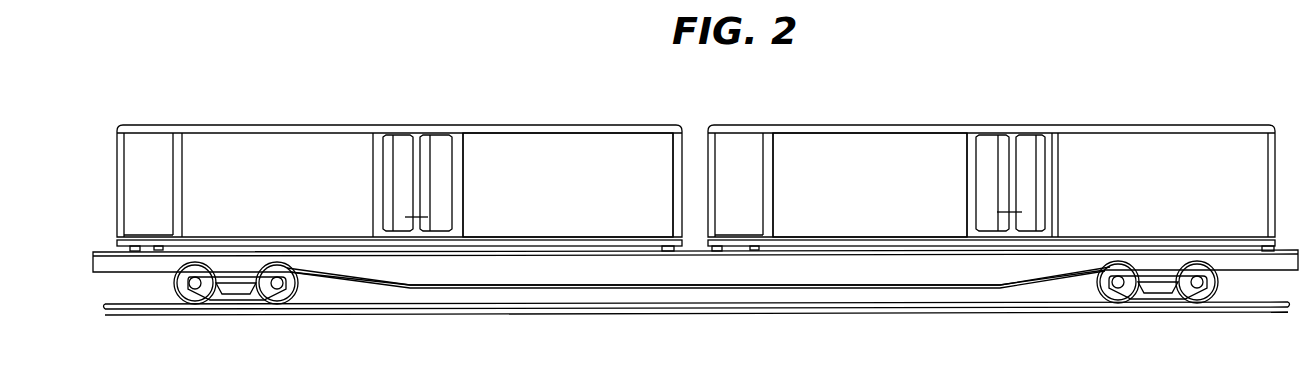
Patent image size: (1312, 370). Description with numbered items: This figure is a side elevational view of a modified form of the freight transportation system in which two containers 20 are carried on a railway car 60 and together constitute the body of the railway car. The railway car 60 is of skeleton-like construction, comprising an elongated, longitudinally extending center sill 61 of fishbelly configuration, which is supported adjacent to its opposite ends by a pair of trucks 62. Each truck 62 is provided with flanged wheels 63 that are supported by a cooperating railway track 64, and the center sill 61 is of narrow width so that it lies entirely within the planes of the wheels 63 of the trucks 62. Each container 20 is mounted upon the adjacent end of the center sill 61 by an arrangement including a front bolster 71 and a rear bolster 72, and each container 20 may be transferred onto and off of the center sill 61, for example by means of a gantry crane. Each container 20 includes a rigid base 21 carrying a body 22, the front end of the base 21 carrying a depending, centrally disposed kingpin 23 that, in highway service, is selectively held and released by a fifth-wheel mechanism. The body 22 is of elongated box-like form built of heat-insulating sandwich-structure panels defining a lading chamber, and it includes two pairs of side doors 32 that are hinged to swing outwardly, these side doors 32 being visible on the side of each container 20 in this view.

The container 20 is at (522, 109).
The base 21 is at (536, 238).
The body 22 is at (573, 187).
The kingpin 23 is at (158, 246).
The side doors 32 is at (398, 162).
The railway car 60 is at (368, 283).
The center sill 61 is at (608, 275).
The trucks 62 is at (243, 300).
The flanged wheels 63 is at (178, 286).
The railway track 64 is at (740, 313).
The front bolster 71 is at (128, 251).
The rear bolster 72 is at (666, 250).